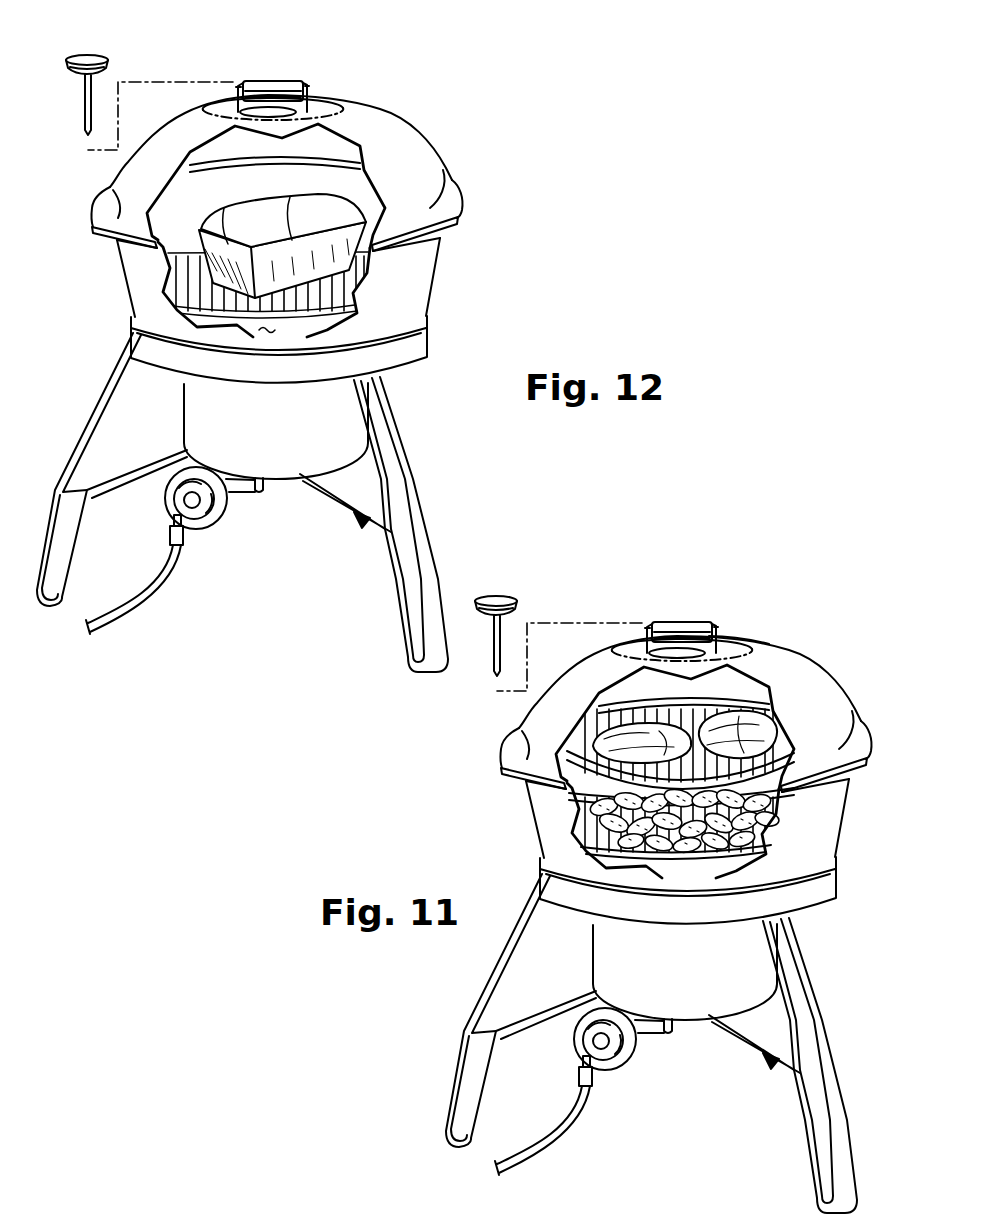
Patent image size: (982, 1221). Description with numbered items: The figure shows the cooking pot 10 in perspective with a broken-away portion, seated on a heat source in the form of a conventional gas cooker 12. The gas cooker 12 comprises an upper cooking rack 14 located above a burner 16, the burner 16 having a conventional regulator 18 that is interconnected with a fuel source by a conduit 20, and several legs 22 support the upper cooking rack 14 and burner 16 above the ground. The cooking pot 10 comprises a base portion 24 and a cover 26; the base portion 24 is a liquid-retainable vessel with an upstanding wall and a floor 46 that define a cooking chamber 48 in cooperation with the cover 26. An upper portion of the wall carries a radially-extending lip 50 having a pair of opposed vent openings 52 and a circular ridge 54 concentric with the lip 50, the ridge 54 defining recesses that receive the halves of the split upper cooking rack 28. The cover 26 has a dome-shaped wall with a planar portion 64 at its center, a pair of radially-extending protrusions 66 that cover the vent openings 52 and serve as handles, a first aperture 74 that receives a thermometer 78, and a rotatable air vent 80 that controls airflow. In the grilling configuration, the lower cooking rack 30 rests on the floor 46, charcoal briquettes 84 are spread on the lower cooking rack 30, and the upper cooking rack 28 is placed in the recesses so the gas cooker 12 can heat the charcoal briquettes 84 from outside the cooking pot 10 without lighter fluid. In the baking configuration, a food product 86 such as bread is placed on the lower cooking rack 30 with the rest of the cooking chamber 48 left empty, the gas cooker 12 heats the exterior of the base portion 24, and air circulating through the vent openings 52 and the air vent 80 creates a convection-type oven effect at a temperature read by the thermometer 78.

In FIG. 12, the cooking pot 10 is at (283, 348).
In FIG. 11, the cooking pot 10 is at (688, 884).
In FIG. 12, the gas cooker 12 is at (273, 494).
In FIG. 11, the gas cooker 12 is at (684, 1035).
In FIG. 12, the upper cooking rack 14 is at (421, 345).
In FIG. 11, the upper cooking rack 14 is at (731, 890).
In FIG. 12, the burner 16 is at (278, 492).
In FIG. 11, the burner 16 is at (685, 1014).
In FIG. 12, the regulator 18 is at (239, 494).
In FIG. 11, the regulator 18 is at (622, 1056).
In FIG. 12, the conduit 20 is at (146, 598).
In FIG. 11, the conduit 20 is at (557, 1131).
In FIG. 12, the legs 22 is at (70, 545).
In FIG. 11, the legs 22 is at (678, 1043).
In FIG. 12, the base portion 24 is at (433, 285).
In FIG. 11, the base portion 24 is at (719, 828).
In FIG. 12, the cover 26 is at (416, 120).
In FIG. 11, the cover 26 is at (698, 698).
In FIG. 11, the upper cooking rack 28 is at (701, 747).
In FIG. 12, the lower cooking rack 30 is at (323, 478).
In FIG. 11, the lower cooking rack 30 is at (698, 850).
In FIG. 12, the floor 46 is at (259, 494).
In FIG. 11, the floor 46 is at (672, 951).
In FIG. 12, the cooking chamber 48 is at (250, 198).
In FIG. 12, the lip 50 is at (452, 231).
In FIG. 11, the lip 50 is at (725, 772).
In FIG. 12, the vent openings 52 is at (461, 219).
In FIG. 11, the vent openings 52 is at (704, 761).
In FIG. 11, the circular ridge 54 is at (699, 812).
In FIG. 11, the planar portion 64 is at (746, 611).
In FIG. 12, the protrusions 66 is at (104, 203).
In FIG. 11, the protrusions 66 is at (688, 726).
In FIG. 12, the first aperture 74 is at (205, 109).
In FIG. 11, the first aperture 74 is at (646, 643).
In FIG. 12, the thermometer 78 is at (96, 54).
In FIG. 11, the thermometer 78 is at (558, 623).
In FIG. 12, the air vent 80 is at (234, 88).
In FIG. 11, the air vent 80 is at (680, 604).
In FIG. 11, the charcoal briquettes 84 is at (706, 820).
In FIG. 12, the food product 86 is at (213, 212).